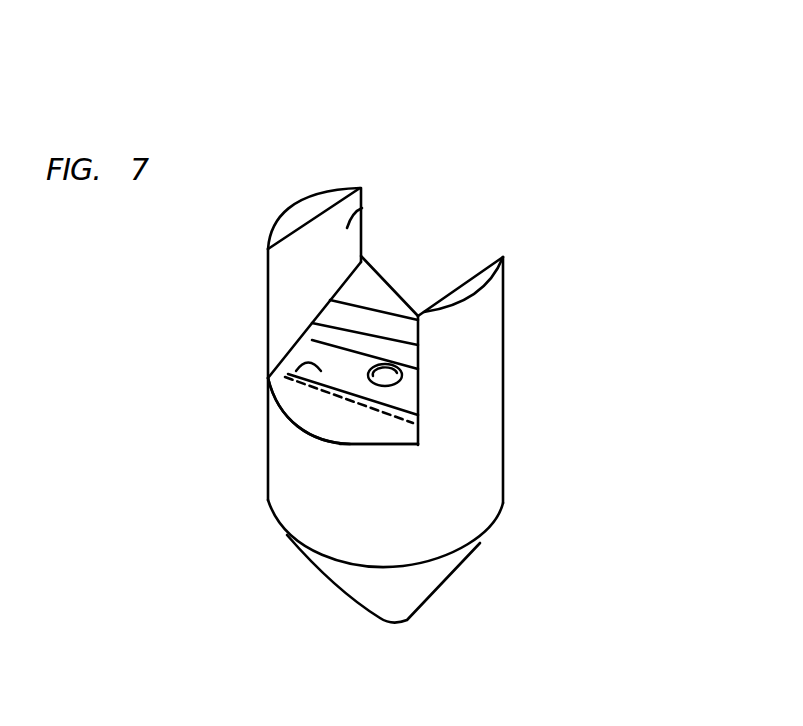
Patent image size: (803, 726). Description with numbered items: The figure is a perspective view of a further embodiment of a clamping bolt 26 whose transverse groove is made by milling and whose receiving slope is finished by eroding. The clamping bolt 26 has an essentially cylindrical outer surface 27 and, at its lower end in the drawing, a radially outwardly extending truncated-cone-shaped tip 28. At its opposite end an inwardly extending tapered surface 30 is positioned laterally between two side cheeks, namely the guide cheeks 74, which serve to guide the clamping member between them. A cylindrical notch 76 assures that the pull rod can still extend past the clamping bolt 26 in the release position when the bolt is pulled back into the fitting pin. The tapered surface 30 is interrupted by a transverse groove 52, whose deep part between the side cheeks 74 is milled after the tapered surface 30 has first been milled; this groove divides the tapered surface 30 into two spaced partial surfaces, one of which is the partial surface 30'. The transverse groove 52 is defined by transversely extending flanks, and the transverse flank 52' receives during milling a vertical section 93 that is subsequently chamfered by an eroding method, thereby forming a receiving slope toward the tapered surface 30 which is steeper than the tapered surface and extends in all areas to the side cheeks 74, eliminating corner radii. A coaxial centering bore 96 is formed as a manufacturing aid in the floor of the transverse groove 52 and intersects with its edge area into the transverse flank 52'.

The clamping bolt 26 is at (294, 483).
The cylindrical outer surface 27 is at (488, 453).
The truncated-cone-shaped tip 28 is at (413, 582).
The tapered surface 30 is at (343, 503).
The partial surface 30' is at (354, 192).
The transverse groove 52 is at (235, 381).
The transverse flank 52' is at (271, 199).
The guide cheeks 74 is at (361, 189).
The cylindrical notch 76 is at (392, 300).
The vertical section 93 is at (312, 323).
The centering bore 96 is at (398, 374).